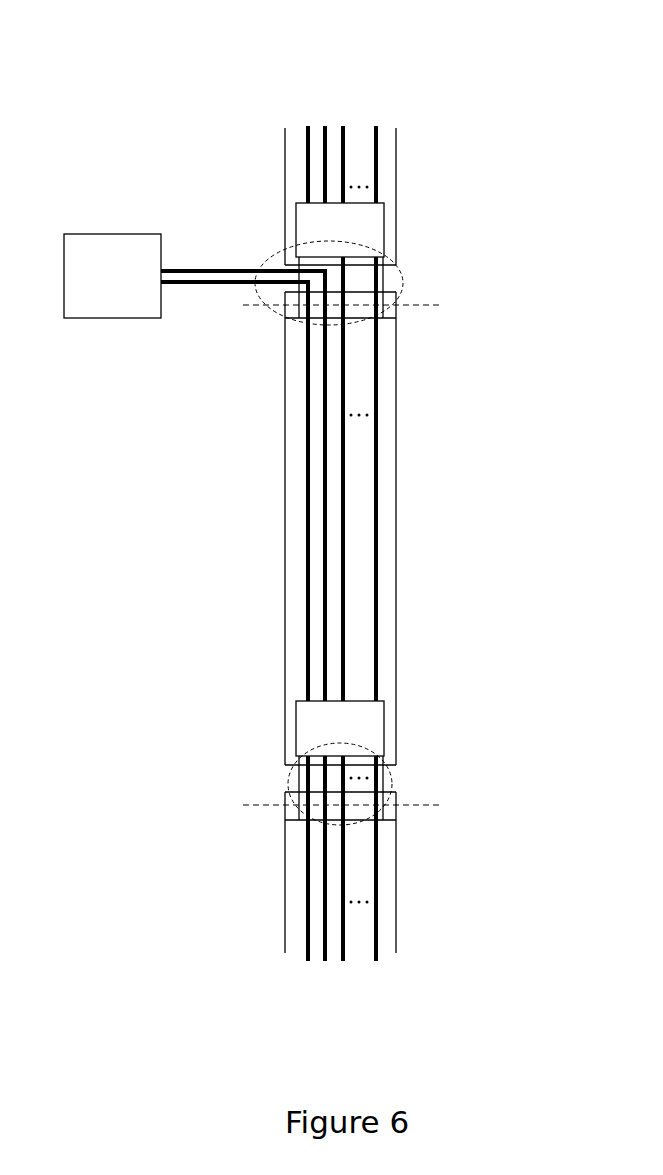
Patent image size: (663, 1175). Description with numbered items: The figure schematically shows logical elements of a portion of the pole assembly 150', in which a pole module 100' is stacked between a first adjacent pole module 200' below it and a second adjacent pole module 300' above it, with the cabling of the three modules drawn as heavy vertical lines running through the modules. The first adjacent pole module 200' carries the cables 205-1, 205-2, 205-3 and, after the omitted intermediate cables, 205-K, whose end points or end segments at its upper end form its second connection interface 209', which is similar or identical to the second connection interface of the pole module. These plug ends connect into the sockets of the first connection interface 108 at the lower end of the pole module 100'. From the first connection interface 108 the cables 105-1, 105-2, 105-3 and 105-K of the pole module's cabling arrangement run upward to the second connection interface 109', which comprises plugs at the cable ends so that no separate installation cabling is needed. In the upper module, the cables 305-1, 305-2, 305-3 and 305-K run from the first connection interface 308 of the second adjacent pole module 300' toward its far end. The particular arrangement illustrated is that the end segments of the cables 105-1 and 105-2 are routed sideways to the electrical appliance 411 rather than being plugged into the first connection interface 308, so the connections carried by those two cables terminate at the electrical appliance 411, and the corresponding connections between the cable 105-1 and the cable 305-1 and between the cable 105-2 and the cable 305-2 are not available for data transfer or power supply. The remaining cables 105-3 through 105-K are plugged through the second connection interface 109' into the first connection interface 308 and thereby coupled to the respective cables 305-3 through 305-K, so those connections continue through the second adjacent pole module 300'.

The pole assembly 150' is at (281, 511).
The second adjacent pole module 300' is at (338, 188).
The cable 305-1 is at (308, 130).
The cable 305-2 is at (325, 133).
The cable 305-3 is at (343, 145).
The cable 305-K is at (376, 162).
The first connection interface 308 is at (384, 213).
The second connection interface 109' is at (366, 271).
The electrical appliance 411 is at (112, 276).
The pole module 100' is at (322, 538).
The cable 105-1 is at (308, 475).
The cable 105-2 is at (325, 505).
The cable 105-3 is at (343, 533).
The cable 105-K is at (376, 520).
The first connection interface 108 is at (384, 717).
The second connection interface 209' is at (376, 771).
The first adjacent pole module 200' is at (333, 889).
The cable 205-1 is at (308, 946).
The cable 205-2 is at (325, 947).
The cable 205-3 is at (343, 935).
The cable 205-K is at (376, 917).